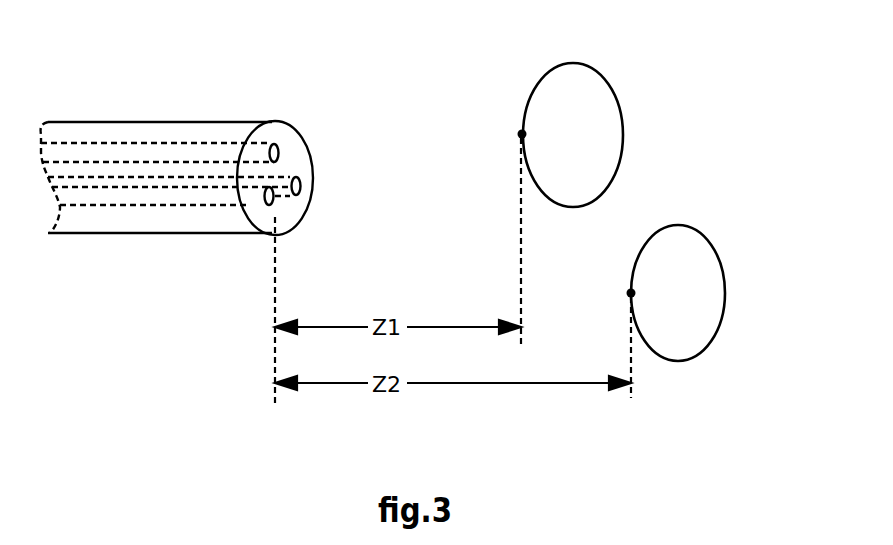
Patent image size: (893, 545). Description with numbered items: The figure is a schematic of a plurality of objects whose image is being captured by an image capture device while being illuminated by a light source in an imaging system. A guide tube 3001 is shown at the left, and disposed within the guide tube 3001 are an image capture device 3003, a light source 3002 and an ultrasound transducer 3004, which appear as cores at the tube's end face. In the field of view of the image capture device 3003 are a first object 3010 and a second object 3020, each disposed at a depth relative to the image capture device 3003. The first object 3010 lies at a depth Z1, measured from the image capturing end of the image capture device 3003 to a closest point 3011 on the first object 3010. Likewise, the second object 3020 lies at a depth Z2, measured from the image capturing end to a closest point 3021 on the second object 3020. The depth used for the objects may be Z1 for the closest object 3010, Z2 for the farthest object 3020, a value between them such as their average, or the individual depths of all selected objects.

The guide tube 3001 is at (140, 233).
The light source 3002 is at (279, 153).
The image capture device 3003 is at (264, 196).
The ultrasound transducer 3004 is at (301, 186).
The first object 3010 is at (575, 63).
The closest point on the first object 3011 is at (522, 134).
The second object 3020 is at (677, 225).
The closest point on the second object 3021 is at (631, 293).